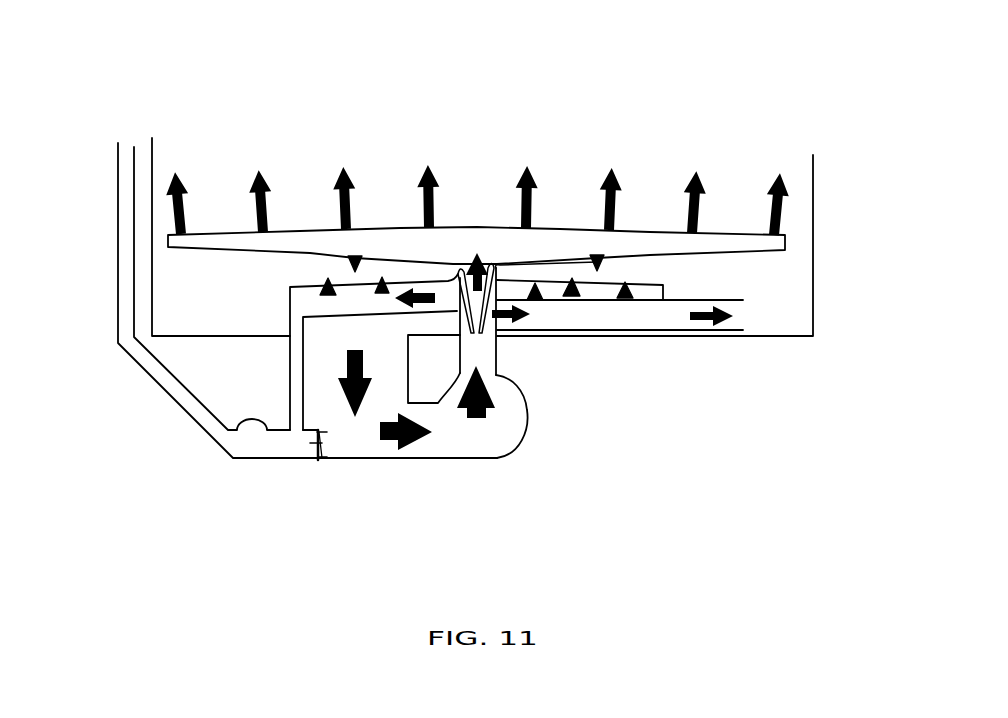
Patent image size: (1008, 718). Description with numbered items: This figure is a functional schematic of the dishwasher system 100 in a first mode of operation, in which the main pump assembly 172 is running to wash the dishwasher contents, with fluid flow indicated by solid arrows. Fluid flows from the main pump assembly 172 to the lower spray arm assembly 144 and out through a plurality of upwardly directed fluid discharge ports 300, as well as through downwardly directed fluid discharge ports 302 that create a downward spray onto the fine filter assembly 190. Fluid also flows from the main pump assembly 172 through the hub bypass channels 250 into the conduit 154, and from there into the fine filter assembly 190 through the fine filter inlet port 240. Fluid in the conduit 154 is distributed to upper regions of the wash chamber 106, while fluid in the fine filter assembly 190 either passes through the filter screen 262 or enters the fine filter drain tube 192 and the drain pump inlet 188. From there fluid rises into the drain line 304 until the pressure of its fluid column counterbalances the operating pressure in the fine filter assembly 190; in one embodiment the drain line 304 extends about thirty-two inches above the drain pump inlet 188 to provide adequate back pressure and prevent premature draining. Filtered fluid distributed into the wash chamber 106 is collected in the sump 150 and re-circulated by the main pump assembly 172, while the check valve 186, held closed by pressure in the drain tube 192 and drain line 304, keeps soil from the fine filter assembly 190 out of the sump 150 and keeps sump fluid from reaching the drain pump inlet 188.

The dishwasher system 100 is at (699, 80).
The wash chamber 106 is at (767, 148).
The lower spray arm assembly 144 is at (472, 199).
The sump 150 is at (352, 423).
The conduit 154 is at (663, 320).
The main pump assembly 172 is at (497, 448).
The check valve 186 is at (320, 460).
The drain pump inlet 188 is at (313, 450).
The fine filter assembly 190 is at (300, 307).
The fine filter drain tube 192 is at (300, 348).
The fine filter inlet port 240 is at (540, 303).
The hub bypass channels 250 is at (496, 318).
The fine filter assembly filter screen 262 is at (438, 280).
The upwardly directed fluid discharge ports 300 is at (187, 237).
The downwardly directed fluid discharge ports 302 is at (310, 253).
The drain line 304 is at (127, 298).